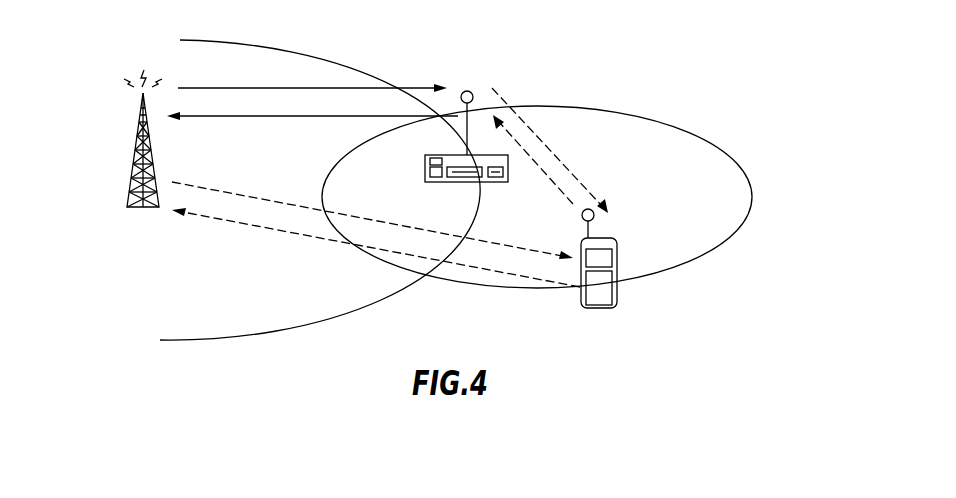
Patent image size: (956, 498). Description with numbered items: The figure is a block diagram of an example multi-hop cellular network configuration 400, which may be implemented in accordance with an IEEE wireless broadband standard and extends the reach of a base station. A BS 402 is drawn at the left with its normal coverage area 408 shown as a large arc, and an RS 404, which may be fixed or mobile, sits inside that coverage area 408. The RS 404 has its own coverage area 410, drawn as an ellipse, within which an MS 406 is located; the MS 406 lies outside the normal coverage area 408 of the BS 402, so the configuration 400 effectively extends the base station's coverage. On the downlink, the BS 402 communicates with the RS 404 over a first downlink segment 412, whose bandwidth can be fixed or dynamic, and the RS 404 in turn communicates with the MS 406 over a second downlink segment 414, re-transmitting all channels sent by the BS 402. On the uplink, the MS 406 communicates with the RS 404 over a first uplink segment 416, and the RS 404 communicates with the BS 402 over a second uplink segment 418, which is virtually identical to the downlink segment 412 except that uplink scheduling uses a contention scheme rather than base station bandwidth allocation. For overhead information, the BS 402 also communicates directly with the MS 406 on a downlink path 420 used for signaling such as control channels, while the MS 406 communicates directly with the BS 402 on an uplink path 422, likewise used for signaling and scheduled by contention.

The multi-hop cellular network configuration 400 is at (719, 98).
The BS 402 is at (125, 175).
The RS 404 is at (425, 160).
The MS 406 is at (618, 290).
The coverage area of BS 408 is at (302, 307).
The coverage area of RS 410 is at (728, 217).
The first downlink segment 412 is at (323, 88).
The second downlink segment 414 is at (588, 189).
The first uplink segment 416 is at (527, 148).
The second uplink segment 418 is at (314, 118).
The downlink path 420 is at (220, 190).
The uplink path 422 is at (228, 220).